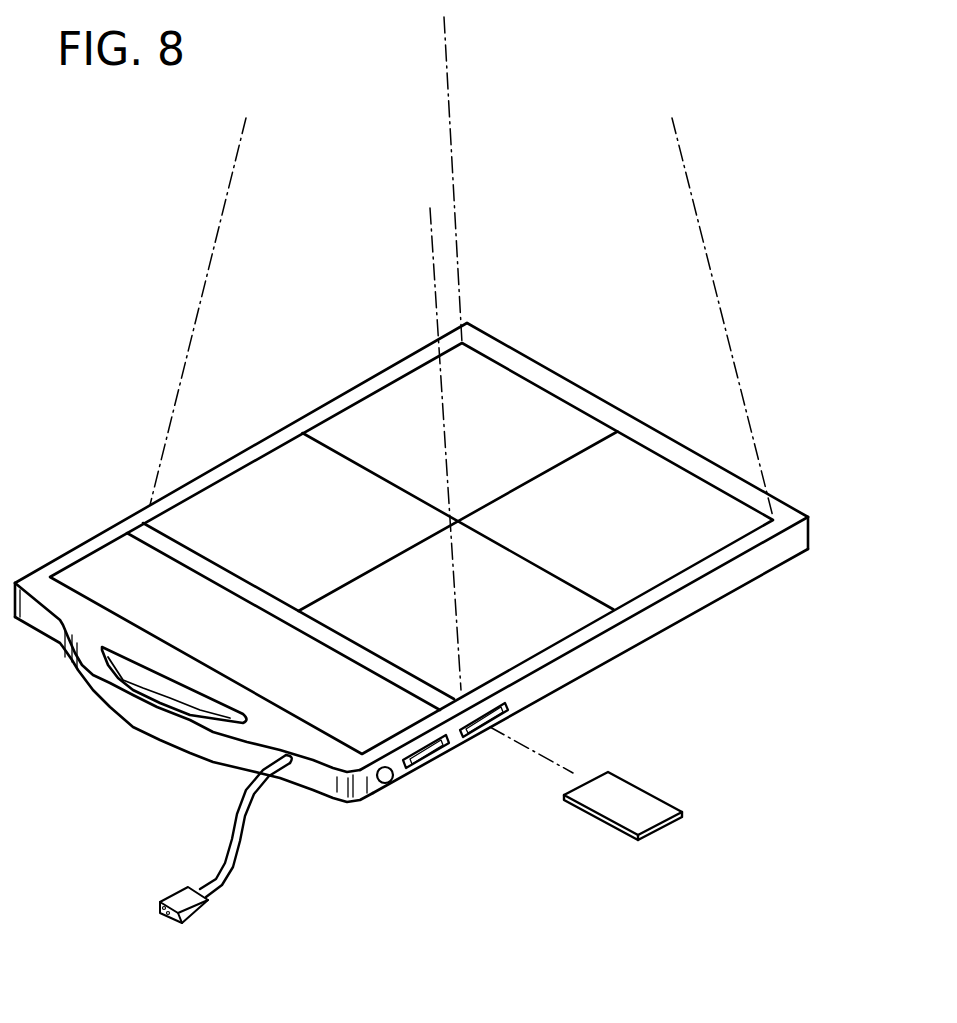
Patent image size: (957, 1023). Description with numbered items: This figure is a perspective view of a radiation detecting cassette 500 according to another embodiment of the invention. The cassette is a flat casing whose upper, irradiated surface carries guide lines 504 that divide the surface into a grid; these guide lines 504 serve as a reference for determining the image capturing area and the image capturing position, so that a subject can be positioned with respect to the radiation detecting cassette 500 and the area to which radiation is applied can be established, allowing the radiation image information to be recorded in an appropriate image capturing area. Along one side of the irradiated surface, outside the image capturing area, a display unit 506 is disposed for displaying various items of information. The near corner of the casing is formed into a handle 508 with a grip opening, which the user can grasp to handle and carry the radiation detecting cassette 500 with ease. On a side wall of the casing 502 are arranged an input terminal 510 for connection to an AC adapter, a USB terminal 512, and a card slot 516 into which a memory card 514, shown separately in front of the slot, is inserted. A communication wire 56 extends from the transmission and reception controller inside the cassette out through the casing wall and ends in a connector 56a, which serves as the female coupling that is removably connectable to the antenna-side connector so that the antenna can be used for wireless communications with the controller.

The radiation detecting cassette 500 is at (411, 586).
The housing 502 is at (613, 650).
The guide lines 504 is at (530, 385).
The display unit 506 is at (75, 577).
The handle 508 is at (152, 723).
The input terminal 510 is at (395, 777).
The USB terminal 512 is at (430, 757).
The memory card 514 is at (653, 807).
The card slot 516 is at (483, 728).
The communication wire 56 is at (211, 874).
The connector 56a is at (178, 893).